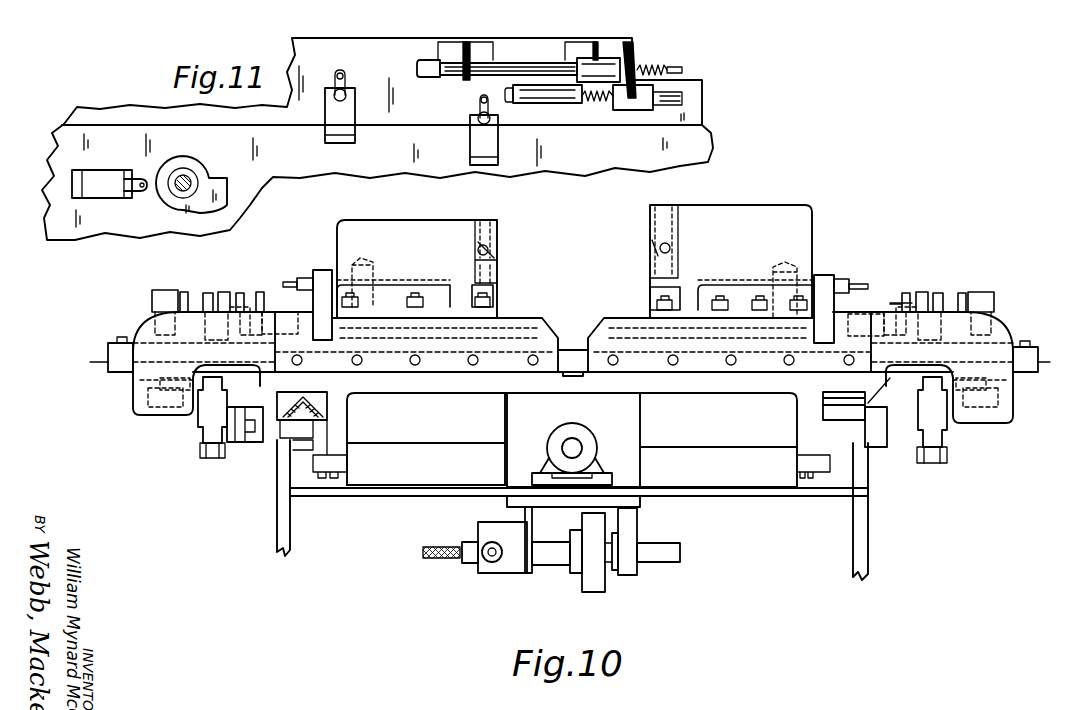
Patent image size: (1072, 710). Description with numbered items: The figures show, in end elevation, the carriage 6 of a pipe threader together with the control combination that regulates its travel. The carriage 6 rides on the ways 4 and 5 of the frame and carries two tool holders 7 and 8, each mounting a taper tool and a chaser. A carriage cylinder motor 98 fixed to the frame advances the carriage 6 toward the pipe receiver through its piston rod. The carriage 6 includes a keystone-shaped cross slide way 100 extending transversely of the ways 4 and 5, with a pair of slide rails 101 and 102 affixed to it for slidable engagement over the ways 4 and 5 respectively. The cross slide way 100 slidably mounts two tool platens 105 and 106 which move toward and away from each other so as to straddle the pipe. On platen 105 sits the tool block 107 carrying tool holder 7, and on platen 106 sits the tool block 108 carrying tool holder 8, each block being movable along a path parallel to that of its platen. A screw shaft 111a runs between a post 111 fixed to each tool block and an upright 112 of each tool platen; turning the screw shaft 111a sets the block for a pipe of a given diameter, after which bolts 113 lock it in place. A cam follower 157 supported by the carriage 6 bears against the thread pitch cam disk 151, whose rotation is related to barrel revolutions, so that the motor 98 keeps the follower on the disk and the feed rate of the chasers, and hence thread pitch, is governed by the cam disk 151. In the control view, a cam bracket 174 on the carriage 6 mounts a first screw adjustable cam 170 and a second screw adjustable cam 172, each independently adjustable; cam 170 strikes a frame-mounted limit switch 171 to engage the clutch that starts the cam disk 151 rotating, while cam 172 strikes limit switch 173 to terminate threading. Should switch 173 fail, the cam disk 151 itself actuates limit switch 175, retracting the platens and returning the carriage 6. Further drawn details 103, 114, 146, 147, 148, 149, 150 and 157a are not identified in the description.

In FIG. 10, the way 4 is at (279, 420).
In FIG. 10, the way 5 is at (866, 420).
In FIG. 10, the carriage 6 is at (897, 300).
In FIG. 10, the tool holder 7 is at (488, 222).
In FIG. 10, the tool holder 8 is at (666, 207).
In FIG. 10, the carriage cylinder motor 98 is at (587, 436).
In FIG. 10, the cross slide way 100 is at (672, 395).
In FIG. 10, the slide rail 101 is at (330, 403).
In FIG. 10, the slide rail 102 is at (823, 398).
In FIG. 10, the end flange 103 is at (90, 362).
In FIG. 10, the tool platen 105 is at (260, 378).
In FIG. 10, the tool platen 106 is at (889, 383).
In FIG. 10, the tool block 107 is at (440, 228).
In FIG. 10, the tool block 108 is at (803, 214).
In FIG. 10, the post 111 is at (364, 262).
In FIG. 10, the screw shaft 111a is at (298, 280).
In FIG. 10, the upright 112 is at (322, 270).
In FIG. 10, the bolts 113 is at (430, 292).
In FIG. 10, the support block 114 is at (246, 436).
In FIG. 10, the guide blocks 146 is at (193, 292).
In FIG. 10, the guide slot 147 is at (272, 312).
In FIG. 10, the end cap 148 is at (150, 320).
In FIG. 10, the lower guide 149 is at (190, 418).
In FIG. 10, the end housing 150 is at (134, 380).
In FIG. 11, the thread pitch cam disk 151 is at (220, 202).
In FIG. 10, the cam follower 157 is at (598, 590).
In FIG. 10, the drive shaft 157a is at (673, 563).
In FIG. 11, the first screw adjustable cam 170 is at (547, 103).
In FIG. 11, the limit switch 171 is at (476, 110).
In FIG. 11, the second screw adjustable cam 172 is at (512, 62).
In FIG. 11, the limit switch 173 is at (346, 84).
In FIG. 11, the cam bracket 174 is at (548, 50).
In FIG. 11, the limit switch 175 is at (140, 198).